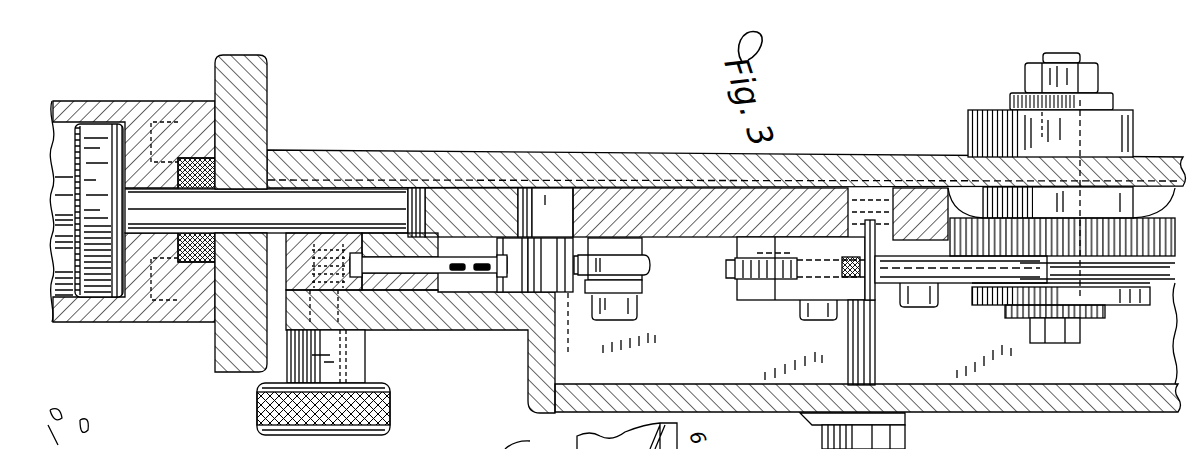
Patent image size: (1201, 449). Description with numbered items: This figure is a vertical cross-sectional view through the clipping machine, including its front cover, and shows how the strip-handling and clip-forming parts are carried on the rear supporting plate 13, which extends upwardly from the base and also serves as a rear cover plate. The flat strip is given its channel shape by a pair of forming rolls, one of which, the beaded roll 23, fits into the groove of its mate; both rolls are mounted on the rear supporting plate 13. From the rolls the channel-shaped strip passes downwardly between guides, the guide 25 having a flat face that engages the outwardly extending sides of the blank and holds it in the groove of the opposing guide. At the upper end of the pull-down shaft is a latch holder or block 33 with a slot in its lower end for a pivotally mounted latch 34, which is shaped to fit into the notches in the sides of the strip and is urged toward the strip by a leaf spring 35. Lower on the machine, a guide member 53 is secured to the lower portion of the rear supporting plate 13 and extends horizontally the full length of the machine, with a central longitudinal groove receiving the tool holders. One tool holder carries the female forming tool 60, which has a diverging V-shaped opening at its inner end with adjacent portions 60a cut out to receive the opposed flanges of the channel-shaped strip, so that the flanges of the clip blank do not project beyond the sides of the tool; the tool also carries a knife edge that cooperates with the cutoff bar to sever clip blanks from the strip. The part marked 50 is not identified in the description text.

The rear supporting plate 13 is at (625, 152).
The forming roll 23 is at (1118, 286).
The guide 25 is at (945, 285).
The latch holder 33 is at (767, 282).
The latch 34 is at (750, 282).
The leaf spring 35 is at (813, 272).
The spindle 50 is at (407, 268).
The guide member 53 is at (373, 302).
The female forming tool 60 is at (478, 268).
The cut-out portions 60a is at (460, 271).